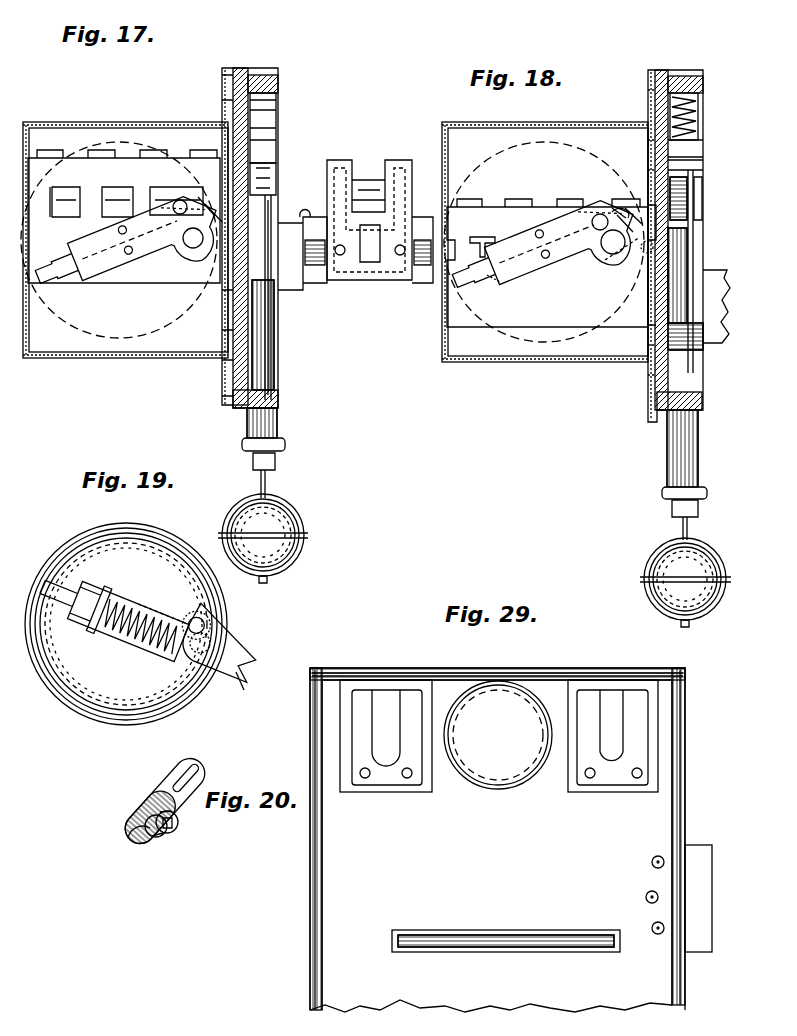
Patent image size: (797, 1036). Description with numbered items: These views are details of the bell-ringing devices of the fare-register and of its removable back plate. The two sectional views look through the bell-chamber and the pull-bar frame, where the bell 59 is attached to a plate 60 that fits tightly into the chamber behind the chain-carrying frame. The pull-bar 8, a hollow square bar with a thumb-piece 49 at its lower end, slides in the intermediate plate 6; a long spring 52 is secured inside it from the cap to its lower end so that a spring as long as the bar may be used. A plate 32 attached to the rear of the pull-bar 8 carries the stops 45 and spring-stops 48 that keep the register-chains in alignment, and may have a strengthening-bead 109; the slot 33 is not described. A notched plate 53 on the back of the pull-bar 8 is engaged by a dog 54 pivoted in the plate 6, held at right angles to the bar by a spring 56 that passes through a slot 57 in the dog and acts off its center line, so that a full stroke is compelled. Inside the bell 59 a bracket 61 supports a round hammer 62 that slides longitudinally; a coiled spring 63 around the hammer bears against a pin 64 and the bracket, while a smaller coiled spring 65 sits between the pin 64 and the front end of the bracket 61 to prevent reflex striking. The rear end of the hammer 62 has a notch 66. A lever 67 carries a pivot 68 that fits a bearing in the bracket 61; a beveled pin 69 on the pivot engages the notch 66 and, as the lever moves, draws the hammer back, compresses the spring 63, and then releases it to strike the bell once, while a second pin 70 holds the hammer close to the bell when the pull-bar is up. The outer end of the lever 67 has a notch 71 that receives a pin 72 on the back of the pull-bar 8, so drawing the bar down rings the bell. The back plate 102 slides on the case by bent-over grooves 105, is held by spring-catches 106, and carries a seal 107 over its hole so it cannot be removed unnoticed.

In FIG. 17, the plate 6 is at (278, 92).
In FIG. 18, the plate 6 is at (700, 88).
In FIG. 17, the pull-bar 8 is at (278, 430).
In FIG. 18, the pull-bar 8 is at (700, 460).
In FIG. 17, the plate 32 is at (370, 292).
In FIG. 18, the plate 32 is at (491, 290).
In FIG. 17, the slot 33 is at (68, 195).
In FIG. 17, the stop 45 is at (52, 158).
In FIG. 18, the stop 45 is at (468, 205).
In FIG. 17, the spring-stop 48 is at (339, 162).
In FIG. 17, the thumb-piece 49 is at (288, 512).
In FIG. 18, the thumb-piece 49 is at (706, 560).
In FIG. 18, the spring 52 is at (700, 128).
In FIG. 17, the notched plate 53 is at (270, 128).
In FIG. 18, the notched plate 53 is at (697, 170).
In FIG. 17, the dog 54 is at (262, 165).
In FIG. 18, the dog 54 is at (650, 200).
In FIG. 17, the spring 56 is at (272, 330).
In FIG. 18, the spring 56 is at (699, 289).
In FIG. 18, the slot 57 is at (697, 195).
In FIG. 17, the bell 59 is at (72, 326).
In FIG. 18, the bell 59 is at (544, 242).
In FIG. 19, the bell 59 is at (126, 624).
In FIG. 17, the plate 60 is at (205, 352).
In FIG. 18, the plate 60 is at (480, 123).
In FIG. 17, the bracket 61 is at (160, 252).
In FIG. 18, the bracket 61 is at (545, 275).
In FIG. 19, the bracket 61 is at (153, 620).
In FIG. 17, the hammer 62 is at (58, 264).
In FIG. 18, the hammer 62 is at (484, 272).
In FIG. 19, the hammer 62 is at (70, 595).
In FIG. 19, the coiled spring 63 is at (135, 618).
In FIG. 19, the pin 64 is at (108, 600).
In FIG. 19, the smaller coiled spring 65 is at (95, 632).
In FIG. 17, the notch 66 is at (178, 200).
In FIG. 18, the notch 66 is at (598, 214).
In FIG. 17, the lever 67 is at (210, 208).
In FIG. 18, the lever 67 is at (600, 286).
In FIG. 19, the lever 67 is at (238, 650).
In FIG. 20, the lever 67 is at (148, 790).
In FIG. 17, the pivot 68 is at (195, 250).
In FIG. 18, the pivot 68 is at (613, 242).
In FIG. 19, the pivot 68 is at (200, 626).
In FIG. 20, the pivot 68 is at (178, 822).
In FIG. 18, the pin 69 is at (590, 220).
In FIG. 20, the pin 69 is at (160, 838).
In FIG. 18, the pin 70 is at (620, 210).
In FIG. 19, the pin 70 is at (193, 650).
In FIG. 20, the pin 70 is at (132, 830).
In FIG. 17, the notch 71 is at (258, 207).
In FIG. 18, the notch 71 is at (628, 262).
In FIG. 19, the notch 71 is at (249, 687).
In FIG. 20, the notch 71 is at (190, 782).
In FIG. 18, the pin 72 is at (645, 254).
In FIG. 29, the plate 102 is at (552, 898).
In FIG. 29, the grooves 105 is at (520, 663).
In FIG. 29, the spring-catches 106 is at (412, 762).
In FIG. 29, the seal 107 is at (498, 735).
In FIG. 17, the strengthening-bead 109 is at (330, 192).